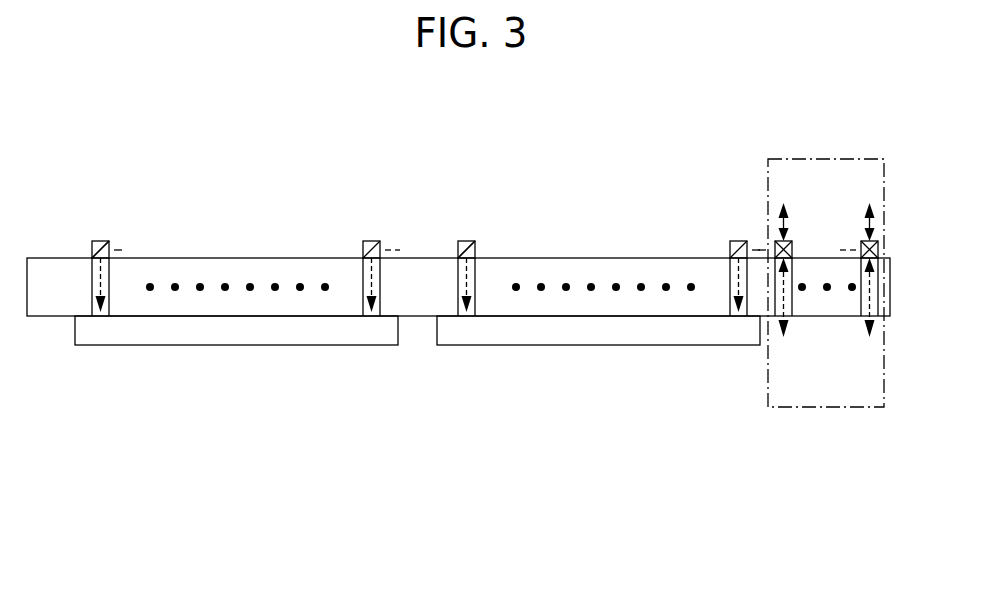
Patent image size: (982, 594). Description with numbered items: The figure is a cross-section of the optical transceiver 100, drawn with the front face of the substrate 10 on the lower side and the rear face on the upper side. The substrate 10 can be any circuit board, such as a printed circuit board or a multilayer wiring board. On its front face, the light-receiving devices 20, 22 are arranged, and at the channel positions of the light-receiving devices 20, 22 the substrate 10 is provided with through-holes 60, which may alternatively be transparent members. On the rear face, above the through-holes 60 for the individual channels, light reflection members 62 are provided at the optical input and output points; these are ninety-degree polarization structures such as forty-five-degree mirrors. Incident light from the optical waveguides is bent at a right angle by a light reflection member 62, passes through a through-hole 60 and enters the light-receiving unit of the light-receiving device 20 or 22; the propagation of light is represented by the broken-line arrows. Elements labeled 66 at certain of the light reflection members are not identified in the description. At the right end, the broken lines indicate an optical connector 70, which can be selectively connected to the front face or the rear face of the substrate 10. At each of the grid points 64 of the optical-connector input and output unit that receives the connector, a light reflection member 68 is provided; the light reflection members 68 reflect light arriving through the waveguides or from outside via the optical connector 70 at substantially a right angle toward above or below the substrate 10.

The optical transceiver 100 is at (523, 82).
The substrate 10 is at (597, 258).
The light-receiving device 20 is at (235, 345).
The light-receiving device 22 is at (553, 345).
The through-hole 60 is at (109, 290).
The light reflection member 62 is at (104, 242).
The grid point 64 is at (861, 243).
The fixed pin holder 66 is at (104, 242).
The light reflection member 68 is at (861, 248).
The optical connector 70 is at (768, 186).